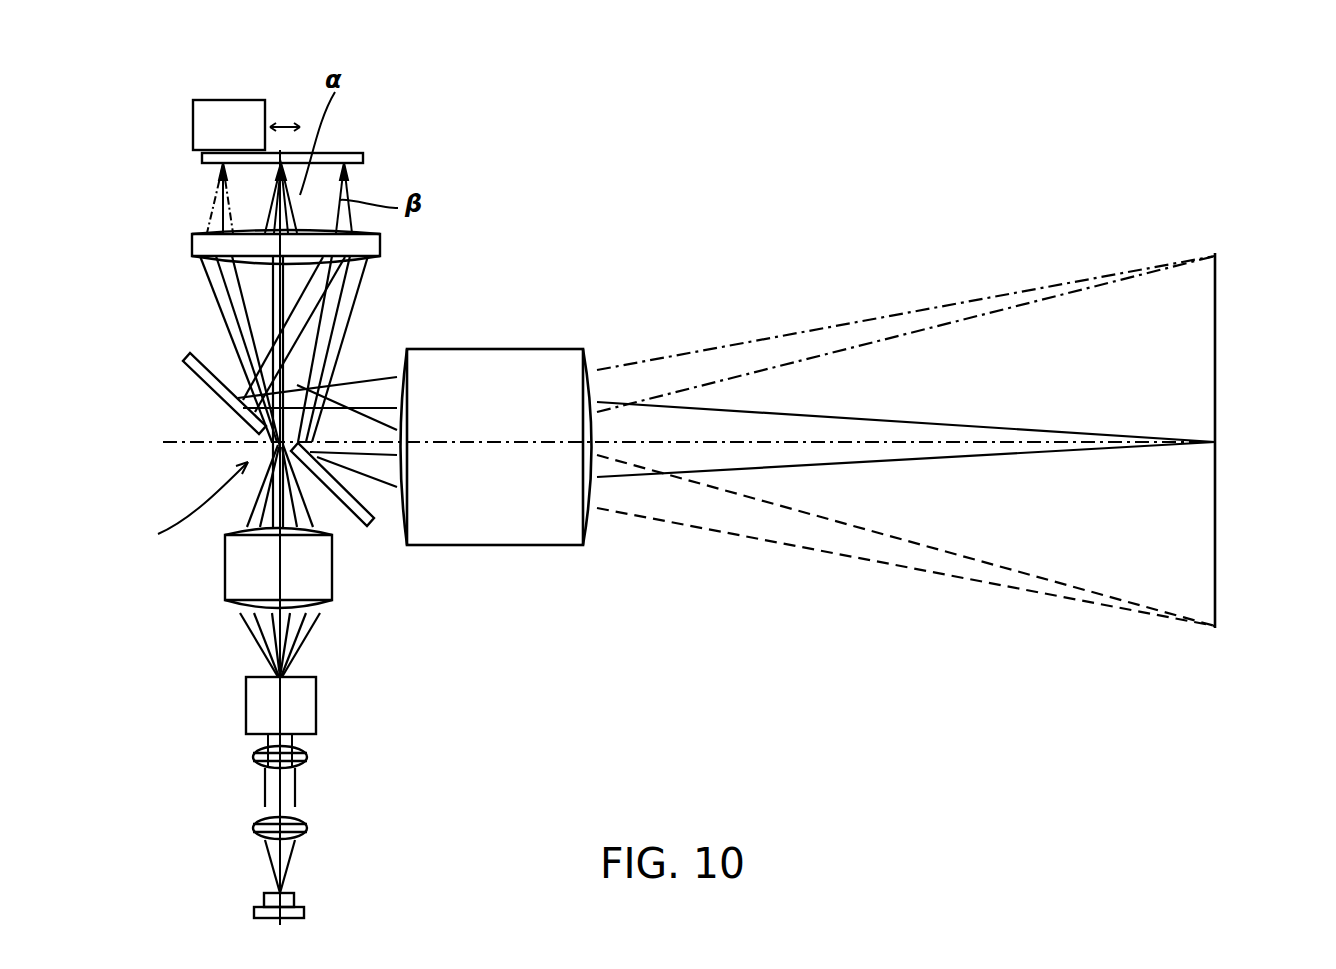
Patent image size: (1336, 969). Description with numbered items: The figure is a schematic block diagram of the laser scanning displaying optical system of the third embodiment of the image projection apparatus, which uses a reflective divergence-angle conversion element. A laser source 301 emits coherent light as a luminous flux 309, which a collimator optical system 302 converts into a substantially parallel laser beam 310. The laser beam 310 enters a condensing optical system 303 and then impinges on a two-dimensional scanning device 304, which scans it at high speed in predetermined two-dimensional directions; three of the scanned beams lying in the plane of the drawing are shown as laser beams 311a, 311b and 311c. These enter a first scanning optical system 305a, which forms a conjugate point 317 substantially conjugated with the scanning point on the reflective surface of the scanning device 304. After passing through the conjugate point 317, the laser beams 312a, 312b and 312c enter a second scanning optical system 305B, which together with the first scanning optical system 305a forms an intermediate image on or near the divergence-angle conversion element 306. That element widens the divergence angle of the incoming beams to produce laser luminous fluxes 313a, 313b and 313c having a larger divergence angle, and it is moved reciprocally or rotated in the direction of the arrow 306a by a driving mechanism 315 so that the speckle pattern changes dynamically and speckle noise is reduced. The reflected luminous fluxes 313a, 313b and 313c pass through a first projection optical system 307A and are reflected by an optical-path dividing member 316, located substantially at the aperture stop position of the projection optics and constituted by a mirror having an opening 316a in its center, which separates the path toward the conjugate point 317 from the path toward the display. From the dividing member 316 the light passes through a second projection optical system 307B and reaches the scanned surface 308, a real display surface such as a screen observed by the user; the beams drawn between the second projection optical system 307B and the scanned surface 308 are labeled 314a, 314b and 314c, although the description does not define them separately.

The laser source 301 is at (305, 908).
The collimator optical system 302 is at (312, 828).
The condensing optical system 303 is at (312, 757).
The two-dimensional scanning device 304 is at (307, 699).
The first scanning optical system 305a is at (332, 578).
The second scanning optical system 305B is at (366, 248).
The first projection optical system 307A is at (380, 254).
The divergence-angle conversion element 306 is at (363, 158).
The arrow 306a is at (286, 122).
The second projection optical system 307B is at (437, 378).
The scanned surface 308 is at (1267, 441).
The luminous flux 309 is at (272, 870).
The laser beam 310 is at (262, 800).
The laser beam 311a is at (265, 650).
The laser beam 311b is at (272, 672).
The laser beam 311c is at (258, 622).
The laser beam 312a is at (280, 305).
The laser beam 312b is at (327, 312).
The laser beam 312c is at (242, 345).
The laser luminous flux 313a is at (275, 210).
The laser luminous flux 313b is at (285, 170).
The laser luminous flux 313c is at (213, 200).
The projected light beam a 314a is at (960, 428).
The projected light beam b 314b is at (928, 325).
The projected light beam c 314c is at (915, 585).
The driving mechanism 315 is at (238, 122).
The optical-path dividing member 316 is at (245, 410).
The opening 316a is at (170, 506).
The conjugate point 317 is at (258, 443).